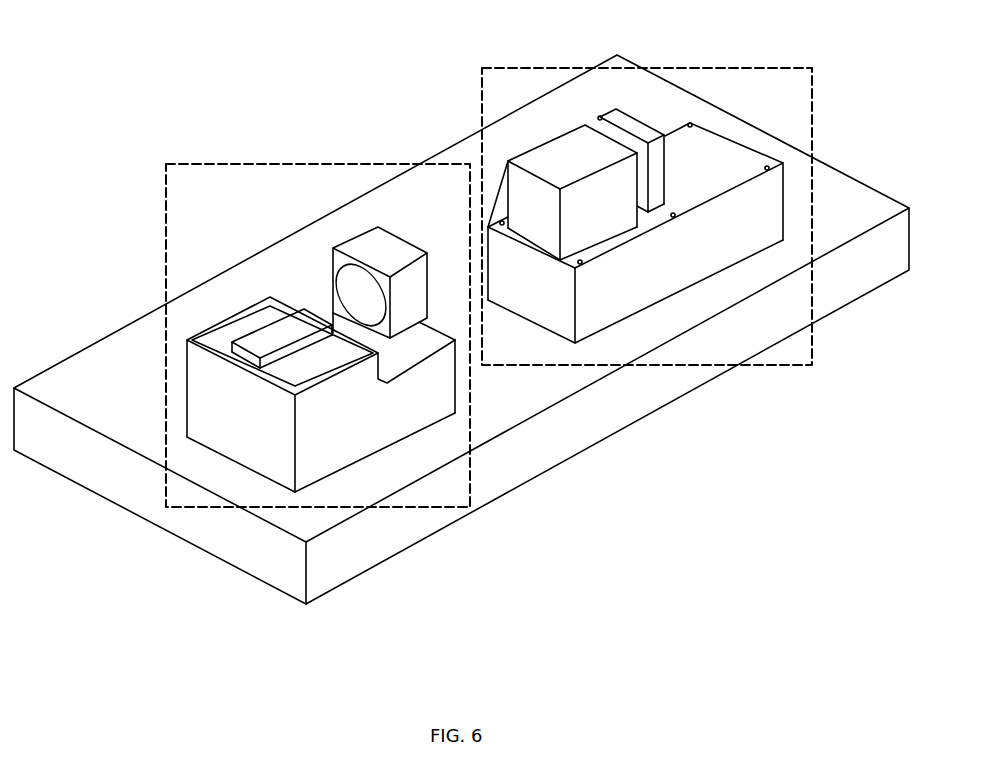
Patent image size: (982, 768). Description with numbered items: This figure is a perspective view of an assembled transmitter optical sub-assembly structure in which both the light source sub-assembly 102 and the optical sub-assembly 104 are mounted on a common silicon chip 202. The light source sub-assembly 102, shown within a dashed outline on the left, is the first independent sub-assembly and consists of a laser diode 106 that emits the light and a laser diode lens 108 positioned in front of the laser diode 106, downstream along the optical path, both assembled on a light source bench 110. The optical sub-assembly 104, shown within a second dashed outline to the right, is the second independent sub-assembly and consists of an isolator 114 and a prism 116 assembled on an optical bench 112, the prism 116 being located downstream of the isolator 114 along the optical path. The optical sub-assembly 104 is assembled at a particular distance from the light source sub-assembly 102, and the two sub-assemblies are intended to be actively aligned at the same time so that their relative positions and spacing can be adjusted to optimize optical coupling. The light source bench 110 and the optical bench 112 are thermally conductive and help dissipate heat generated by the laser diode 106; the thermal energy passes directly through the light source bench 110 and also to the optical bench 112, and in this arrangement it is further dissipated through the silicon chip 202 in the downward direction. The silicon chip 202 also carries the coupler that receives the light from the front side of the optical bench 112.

The light source sub-assembly 102 is at (418, 517).
The optical sub-assembly 104 is at (771, 373).
The laser diode 106 is at (279, 323).
The laser diode lens 108 is at (368, 241).
The light source bench 110 is at (235, 412).
The optical bench 112 is at (761, 198).
The isolator 114 is at (579, 146).
The prism 116 is at (690, 144).
The silicon chip 202 is at (592, 432).